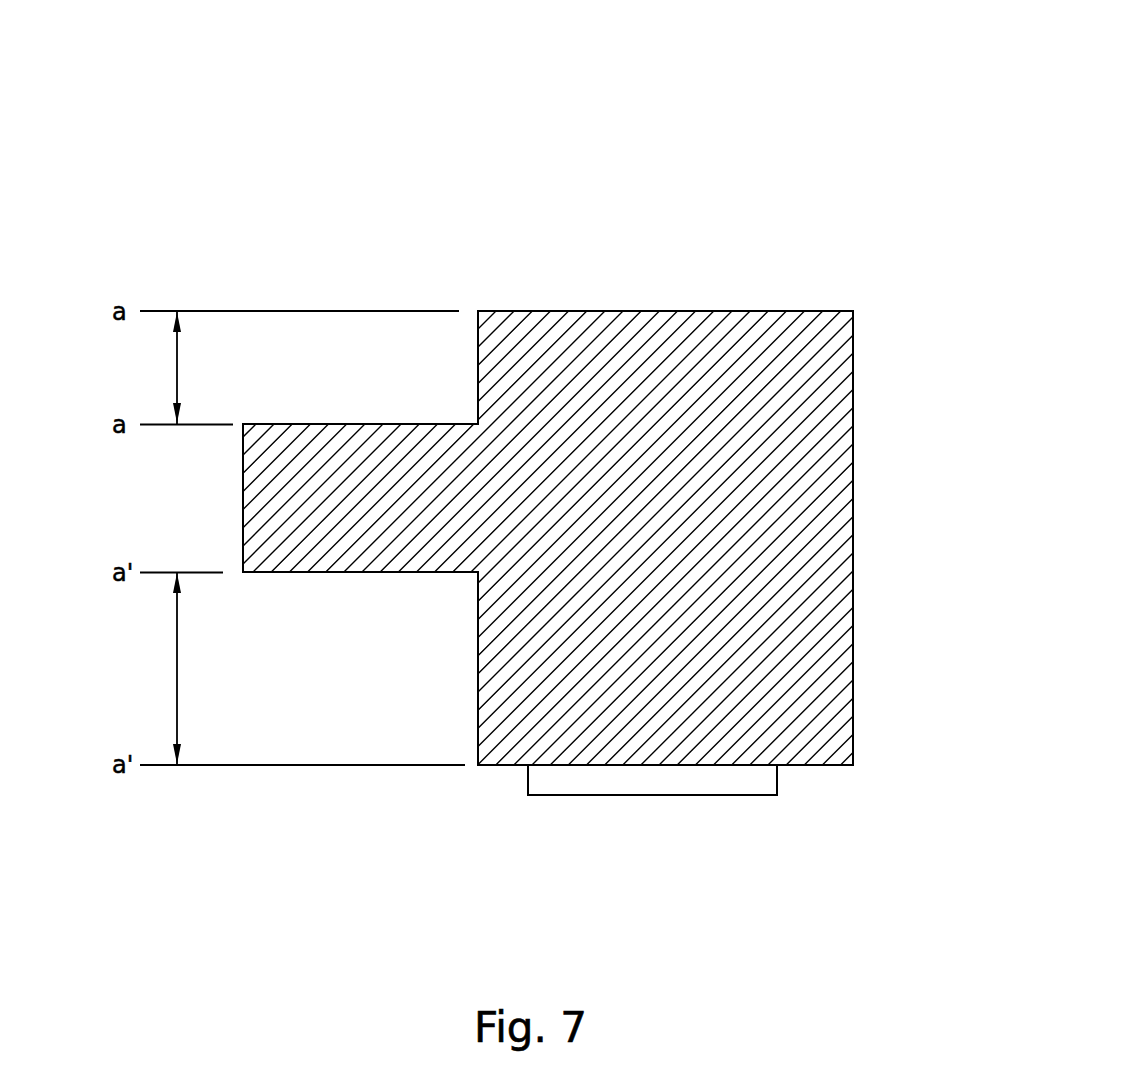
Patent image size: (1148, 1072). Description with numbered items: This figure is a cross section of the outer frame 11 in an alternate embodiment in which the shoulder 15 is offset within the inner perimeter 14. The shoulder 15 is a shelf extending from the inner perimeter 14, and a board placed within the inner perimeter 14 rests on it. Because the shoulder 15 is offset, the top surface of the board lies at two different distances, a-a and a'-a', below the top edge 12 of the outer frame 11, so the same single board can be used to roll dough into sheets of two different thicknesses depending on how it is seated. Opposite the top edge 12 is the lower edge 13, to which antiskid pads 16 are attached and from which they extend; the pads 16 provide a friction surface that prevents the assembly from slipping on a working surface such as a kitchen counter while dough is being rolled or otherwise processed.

The outer frame 11 is at (697, 176).
The top edge 12 is at (715, 311).
The lower edge 13 is at (819, 765).
The inner perimeter 14 is at (478, 373).
The shoulder 15 is at (400, 424).
The antiskid pads 16 is at (679, 797).